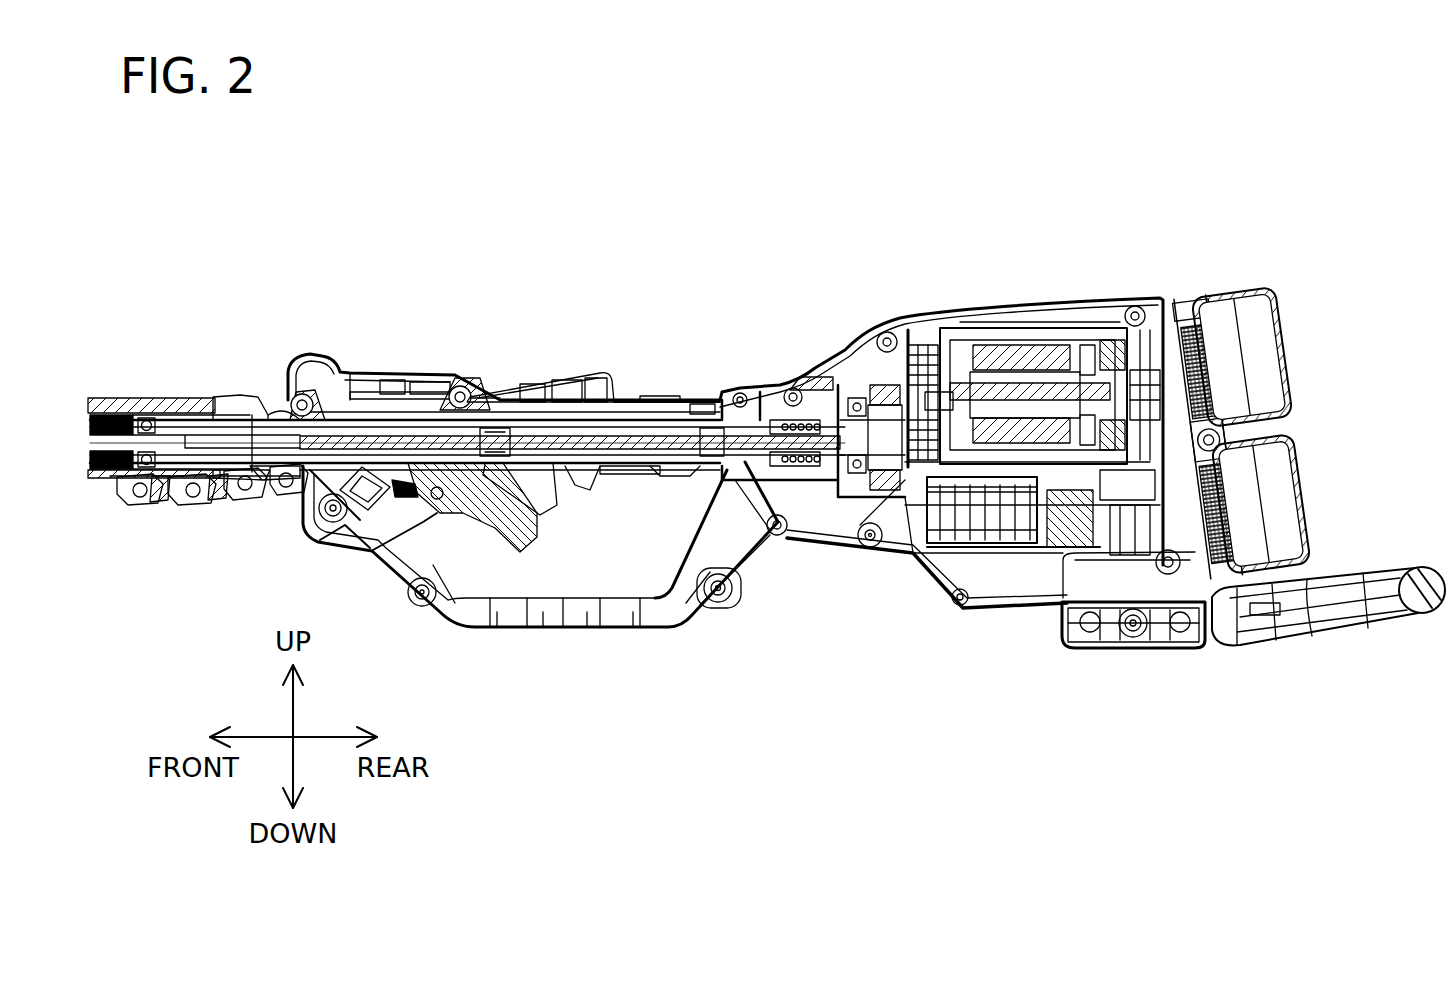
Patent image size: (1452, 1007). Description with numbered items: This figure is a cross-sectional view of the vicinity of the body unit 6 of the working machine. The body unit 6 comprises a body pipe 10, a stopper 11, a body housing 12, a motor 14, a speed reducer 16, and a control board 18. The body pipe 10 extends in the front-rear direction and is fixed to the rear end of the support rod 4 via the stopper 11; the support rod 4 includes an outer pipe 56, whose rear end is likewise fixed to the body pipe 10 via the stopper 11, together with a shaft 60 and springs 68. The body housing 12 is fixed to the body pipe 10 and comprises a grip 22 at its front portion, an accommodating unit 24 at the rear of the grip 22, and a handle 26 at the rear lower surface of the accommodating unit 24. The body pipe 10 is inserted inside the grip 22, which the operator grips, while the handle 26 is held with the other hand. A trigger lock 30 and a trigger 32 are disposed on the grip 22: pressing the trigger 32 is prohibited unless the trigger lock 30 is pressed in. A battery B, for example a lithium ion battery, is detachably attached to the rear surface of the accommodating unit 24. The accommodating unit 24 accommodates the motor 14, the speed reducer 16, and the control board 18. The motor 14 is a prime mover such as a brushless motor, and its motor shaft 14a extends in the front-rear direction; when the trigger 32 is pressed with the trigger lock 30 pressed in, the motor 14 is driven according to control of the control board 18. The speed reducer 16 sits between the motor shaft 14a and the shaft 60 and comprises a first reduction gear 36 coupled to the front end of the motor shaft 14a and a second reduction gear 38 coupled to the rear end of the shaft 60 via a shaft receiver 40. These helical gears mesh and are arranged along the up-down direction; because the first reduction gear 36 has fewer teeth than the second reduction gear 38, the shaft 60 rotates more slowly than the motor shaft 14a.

The support rod 4 is at (107, 510).
The body unit 6 is at (463, 295).
The body pipe 10 is at (230, 493).
The stopper 11 is at (213, 402).
The body housing 12 is at (777, 390).
The motor 14 is at (1020, 338).
The motor shaft 14a is at (993, 360).
The speed reducer 16 is at (900, 547).
The control board 18 is at (1173, 647).
The grip 22 is at (350, 372).
The accommodating unit 24 is at (913, 560).
The handle 26 is at (1290, 623).
The trigger lock 30 is at (555, 398).
The trigger 32 is at (500, 523).
The first reduction gear 36 is at (873, 377).
The second reduction gear 38 is at (867, 547).
The shaft receiver 40 is at (825, 380).
The outer pipe 56 is at (162, 490).
The shaft 60 is at (827, 540).
The spring 68 is at (112, 410).
The battery B is at (1303, 450).